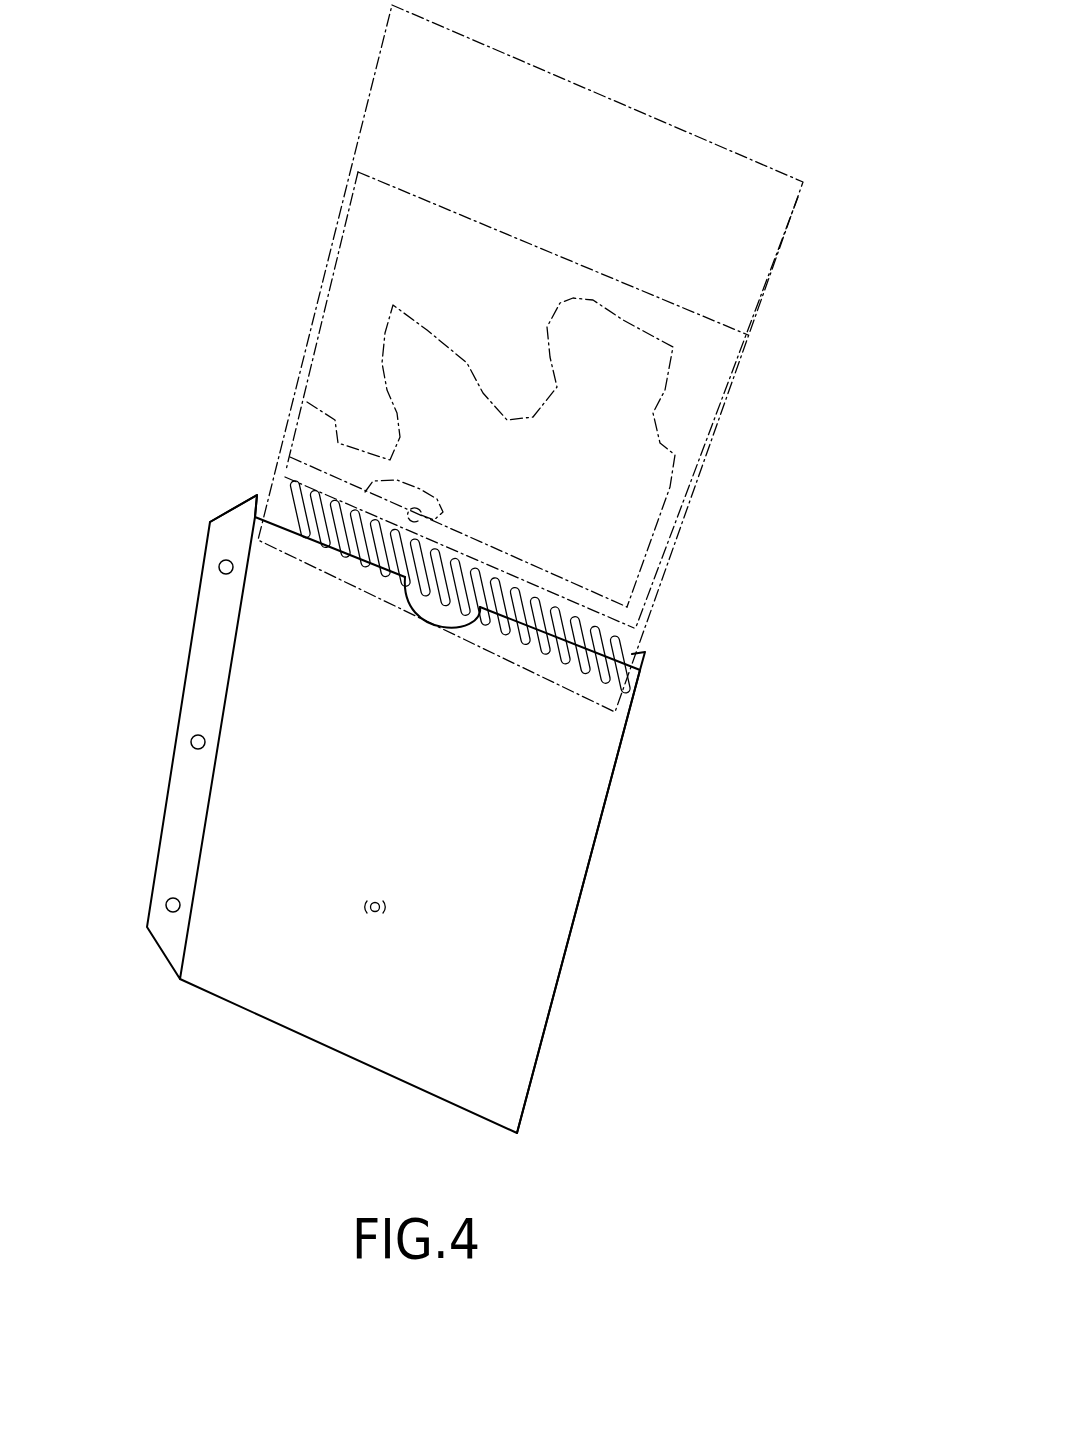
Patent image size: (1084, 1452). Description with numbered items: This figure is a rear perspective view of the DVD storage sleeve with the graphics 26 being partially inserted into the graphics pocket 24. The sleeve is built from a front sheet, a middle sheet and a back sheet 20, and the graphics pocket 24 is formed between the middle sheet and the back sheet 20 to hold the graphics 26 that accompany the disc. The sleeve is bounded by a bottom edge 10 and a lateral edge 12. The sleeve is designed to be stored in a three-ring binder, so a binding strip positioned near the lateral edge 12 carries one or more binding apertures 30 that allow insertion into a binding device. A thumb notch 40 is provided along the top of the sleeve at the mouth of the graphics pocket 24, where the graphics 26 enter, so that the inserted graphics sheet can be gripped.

The bottom edge 10 is at (297, 1033).
The lateral edge 12 is at (578, 914).
The back sheet 20 is at (602, 810).
The graphics pocket 24 is at (268, 537).
The graphics 26 is at (729, 392).
The binding aperture 30 is at (218, 566).
The thumb notch 40 is at (457, 627).